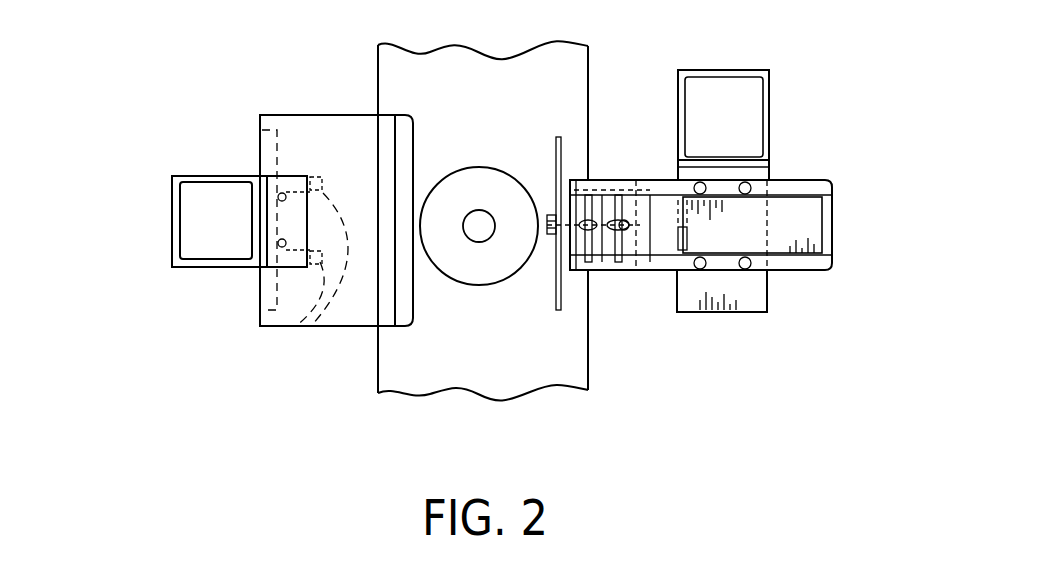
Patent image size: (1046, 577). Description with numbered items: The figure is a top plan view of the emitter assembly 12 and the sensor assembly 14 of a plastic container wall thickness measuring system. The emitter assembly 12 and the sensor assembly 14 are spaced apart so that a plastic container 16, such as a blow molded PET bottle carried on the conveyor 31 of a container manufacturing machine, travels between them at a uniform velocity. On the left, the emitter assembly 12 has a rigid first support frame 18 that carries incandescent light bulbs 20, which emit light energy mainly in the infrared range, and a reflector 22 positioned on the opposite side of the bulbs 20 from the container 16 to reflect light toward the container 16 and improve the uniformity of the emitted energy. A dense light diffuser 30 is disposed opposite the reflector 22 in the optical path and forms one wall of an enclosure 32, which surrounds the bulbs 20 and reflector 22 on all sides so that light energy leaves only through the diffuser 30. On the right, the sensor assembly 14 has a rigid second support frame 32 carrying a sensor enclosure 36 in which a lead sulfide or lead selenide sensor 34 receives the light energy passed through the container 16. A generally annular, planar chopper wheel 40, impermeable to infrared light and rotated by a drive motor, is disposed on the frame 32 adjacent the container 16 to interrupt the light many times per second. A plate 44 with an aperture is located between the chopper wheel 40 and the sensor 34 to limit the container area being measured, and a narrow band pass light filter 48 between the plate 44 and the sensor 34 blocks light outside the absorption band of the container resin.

The emitter assembly 12 is at (140, 175).
The sensor assembly 14 is at (867, 173).
The plastic container 16 is at (493, 166).
The first support frame 18 is at (177, 267).
The incandescent light bulb 20 is at (297, 330).
The reflector 22 is at (277, 157).
The dense light diffuser 30 is at (404, 333).
The conveyor 31 is at (558, 365).
The enclosure / second support frame 32 is at (275, 112).
The sensor 34 is at (682, 248).
The sensor enclosure 36 is at (790, 213).
The chopper wheel 40 is at (563, 298).
The plate 44 is at (568, 198).
The narrow band pass light filter 48 is at (648, 200).